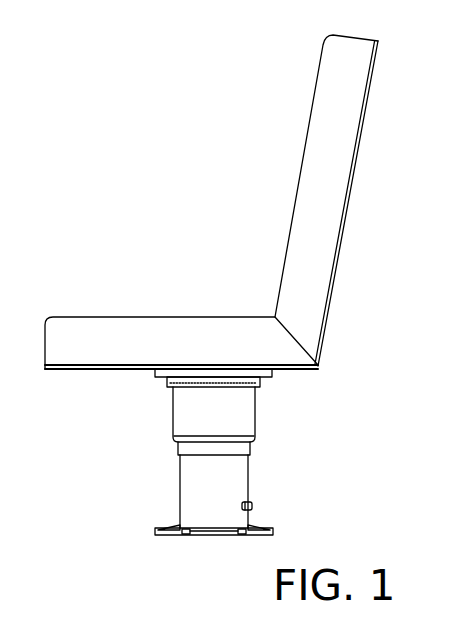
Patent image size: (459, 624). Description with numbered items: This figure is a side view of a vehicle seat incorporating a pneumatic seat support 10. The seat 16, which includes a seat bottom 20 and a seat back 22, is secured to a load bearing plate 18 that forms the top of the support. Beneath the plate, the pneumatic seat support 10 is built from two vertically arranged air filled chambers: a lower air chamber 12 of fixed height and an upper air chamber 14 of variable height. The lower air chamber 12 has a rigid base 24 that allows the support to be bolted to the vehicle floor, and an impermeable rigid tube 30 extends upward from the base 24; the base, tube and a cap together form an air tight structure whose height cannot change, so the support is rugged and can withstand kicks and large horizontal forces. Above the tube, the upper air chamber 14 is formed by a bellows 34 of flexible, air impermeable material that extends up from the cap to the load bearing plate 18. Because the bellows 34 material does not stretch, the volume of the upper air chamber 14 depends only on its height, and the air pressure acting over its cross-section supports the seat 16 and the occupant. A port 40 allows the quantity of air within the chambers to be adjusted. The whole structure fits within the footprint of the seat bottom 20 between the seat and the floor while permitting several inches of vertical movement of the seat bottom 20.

The pneumatic seat support 10 is at (355, 416).
The lower air chamber 12 is at (152, 509).
The upper air chamber 14 is at (150, 417).
The seat 16 is at (330, 115).
The load bearing plate 18 is at (265, 378).
The seat bottom 20 is at (158, 330).
The seat back 22 is at (317, 197).
The rigid base 24 is at (253, 530).
The rigid tube 30 is at (190, 482).
The bellows 34 is at (247, 413).
The port 40 is at (252, 507).